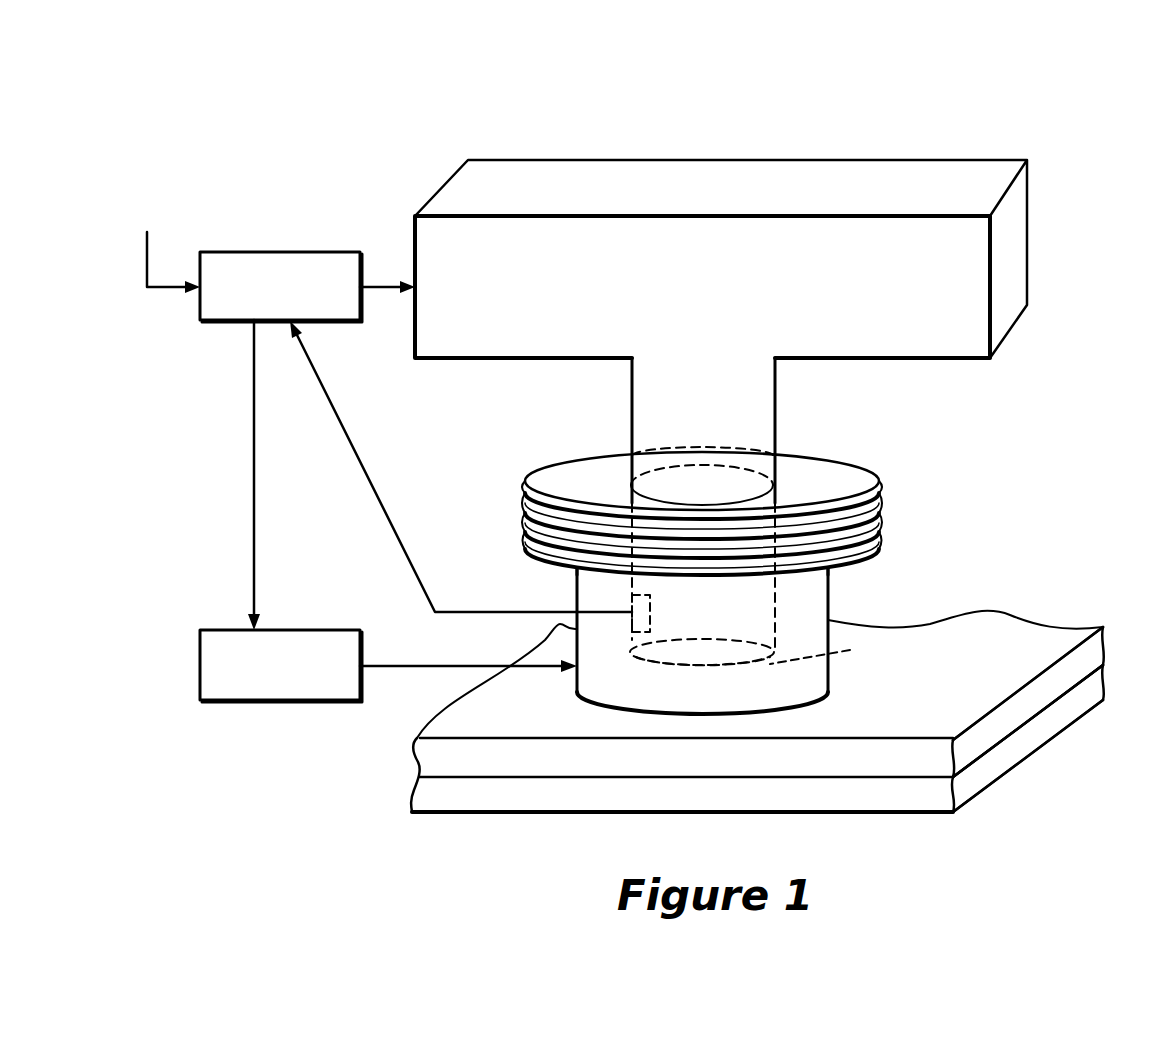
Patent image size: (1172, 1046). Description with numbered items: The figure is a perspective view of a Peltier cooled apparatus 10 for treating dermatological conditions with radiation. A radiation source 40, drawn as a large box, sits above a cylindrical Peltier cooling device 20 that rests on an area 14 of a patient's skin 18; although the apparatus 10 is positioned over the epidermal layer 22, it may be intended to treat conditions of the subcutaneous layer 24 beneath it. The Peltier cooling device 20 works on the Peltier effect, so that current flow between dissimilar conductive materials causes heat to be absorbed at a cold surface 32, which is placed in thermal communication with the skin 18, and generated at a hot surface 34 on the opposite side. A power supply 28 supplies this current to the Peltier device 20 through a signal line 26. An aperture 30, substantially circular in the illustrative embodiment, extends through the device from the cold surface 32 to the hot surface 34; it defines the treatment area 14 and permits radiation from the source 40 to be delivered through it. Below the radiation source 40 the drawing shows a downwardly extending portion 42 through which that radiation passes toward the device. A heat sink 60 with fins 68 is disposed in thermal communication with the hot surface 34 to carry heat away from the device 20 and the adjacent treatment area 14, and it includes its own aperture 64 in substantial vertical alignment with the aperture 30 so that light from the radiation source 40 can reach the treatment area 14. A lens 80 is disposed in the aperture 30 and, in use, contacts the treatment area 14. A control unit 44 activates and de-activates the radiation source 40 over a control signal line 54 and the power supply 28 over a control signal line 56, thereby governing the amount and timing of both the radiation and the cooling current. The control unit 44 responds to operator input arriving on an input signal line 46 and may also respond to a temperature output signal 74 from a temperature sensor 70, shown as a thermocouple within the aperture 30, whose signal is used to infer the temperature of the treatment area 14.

The apparatus 10 is at (647, 125).
The treatment area 14 is at (702, 652).
The patient's skin 18 is at (1036, 606).
The Peltier cooling device 20 is at (845, 595).
The epidermal layer 22 is at (1105, 648).
The subcutaneous layer 24 is at (1105, 685).
The signal line 26 is at (390, 668).
The power supply 28 is at (252, 700).
The aperture 30 is at (744, 615).
The cold surface 32 is at (793, 702).
The hot surface 34 is at (568, 565).
The radiation source 40 is at (1030, 230).
The radiation beam 42 is at (775, 393).
The control unit 44 is at (237, 250).
The input signal line 46 is at (147, 265).
The control signal line 54 is at (380, 283).
The control signal line 56 is at (256, 540).
The heat sink 60 is at (843, 455).
The aperture 64 is at (712, 484).
The fins 68 is at (882, 515).
The temperature sensor 70 is at (650, 607).
The temperature output signal 74 is at (364, 463).
The lens 80 is at (828, 650).